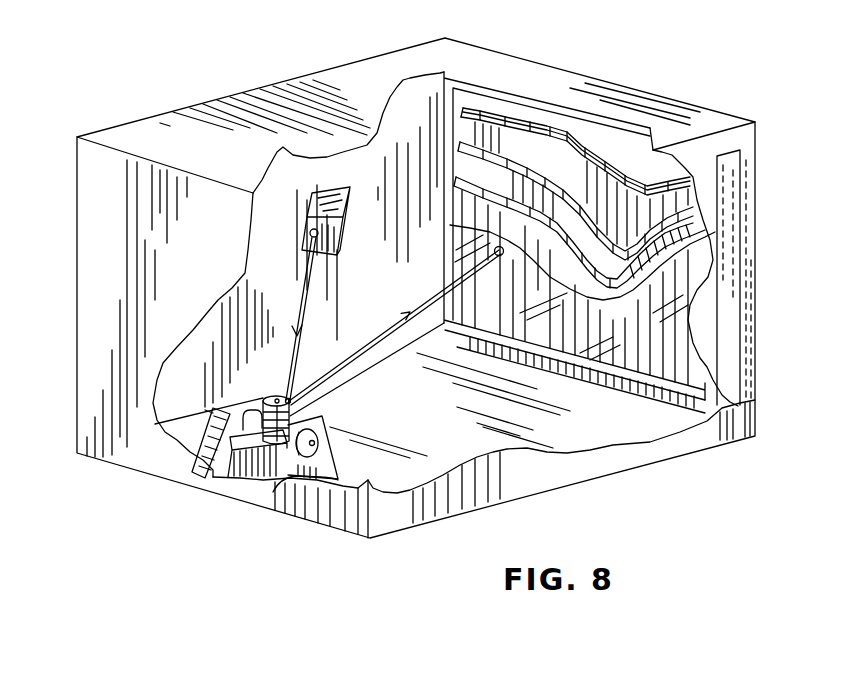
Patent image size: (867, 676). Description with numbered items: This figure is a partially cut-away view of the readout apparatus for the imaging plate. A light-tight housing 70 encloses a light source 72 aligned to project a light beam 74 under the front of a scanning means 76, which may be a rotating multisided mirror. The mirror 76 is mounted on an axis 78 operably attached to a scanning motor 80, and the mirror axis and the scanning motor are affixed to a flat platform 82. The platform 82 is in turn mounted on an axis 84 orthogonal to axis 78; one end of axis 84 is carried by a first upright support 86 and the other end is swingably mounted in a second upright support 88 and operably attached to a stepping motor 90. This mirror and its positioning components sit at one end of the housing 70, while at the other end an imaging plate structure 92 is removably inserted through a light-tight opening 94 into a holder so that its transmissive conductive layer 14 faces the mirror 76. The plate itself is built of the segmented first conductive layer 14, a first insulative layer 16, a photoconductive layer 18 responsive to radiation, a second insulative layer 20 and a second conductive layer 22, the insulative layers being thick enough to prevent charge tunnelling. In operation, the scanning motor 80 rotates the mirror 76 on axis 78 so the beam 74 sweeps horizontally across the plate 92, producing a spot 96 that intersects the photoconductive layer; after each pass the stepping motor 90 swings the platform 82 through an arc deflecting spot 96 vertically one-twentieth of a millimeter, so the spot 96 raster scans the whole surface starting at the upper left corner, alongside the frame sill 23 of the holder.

The first conductive layer 14 is at (602, 335).
The first insulative layer 16 is at (461, 192).
The photoconductive layer 18 is at (480, 158).
The second insulative layer 20 is at (500, 127).
The second conductive layer 22 is at (476, 108).
The sill 23 is at (707, 422).
The light-tight housing 70 is at (278, 91).
The light source 72 is at (311, 201).
The light beam 74 is at (309, 280).
The scanning means 76 is at (204, 437).
The axis 78 is at (293, 392).
The scanning motor 80 is at (253, 467).
The flat platform 82 is at (213, 470).
The axis 84 is at (276, 398).
The first upright support 86 is at (213, 412).
The second upright support 88 is at (287, 478).
The stepping motor 90 is at (320, 480).
The imaging plate structure 92 is at (727, 160).
The light-tight opening 94 is at (738, 405).
The spot 96 is at (504, 253).